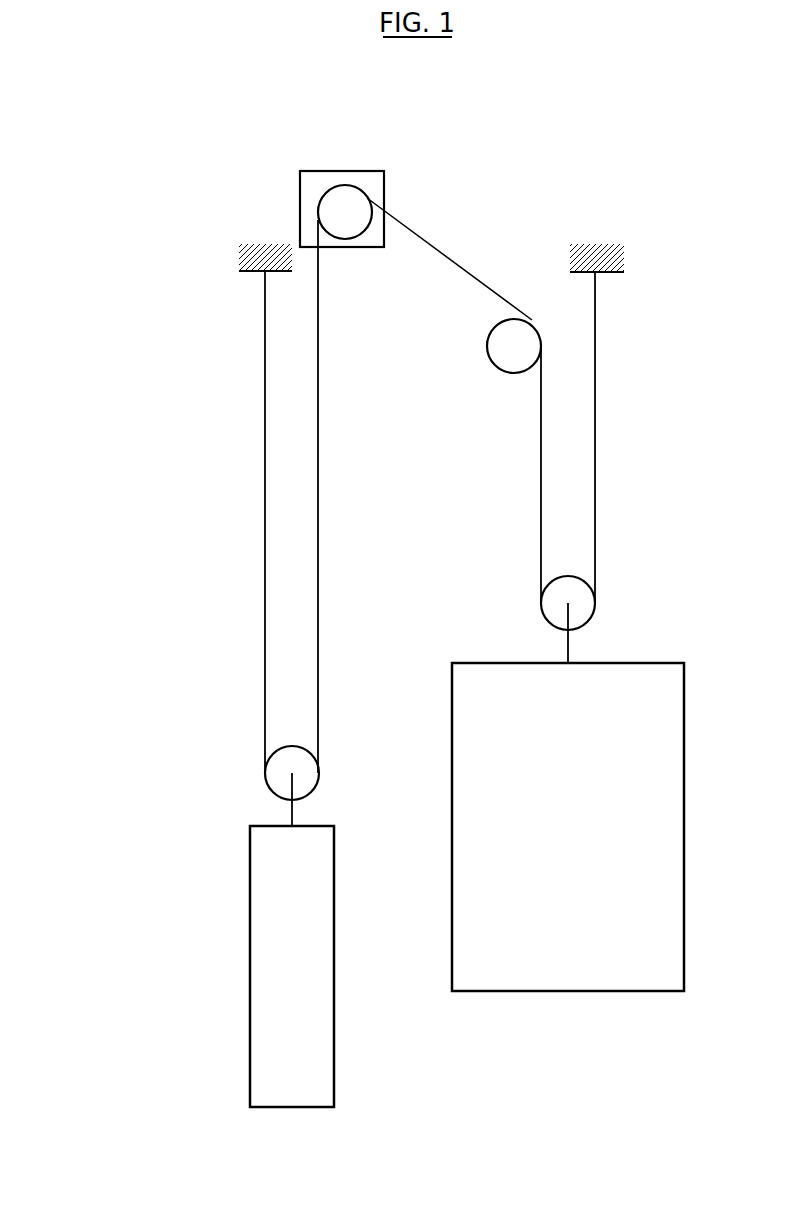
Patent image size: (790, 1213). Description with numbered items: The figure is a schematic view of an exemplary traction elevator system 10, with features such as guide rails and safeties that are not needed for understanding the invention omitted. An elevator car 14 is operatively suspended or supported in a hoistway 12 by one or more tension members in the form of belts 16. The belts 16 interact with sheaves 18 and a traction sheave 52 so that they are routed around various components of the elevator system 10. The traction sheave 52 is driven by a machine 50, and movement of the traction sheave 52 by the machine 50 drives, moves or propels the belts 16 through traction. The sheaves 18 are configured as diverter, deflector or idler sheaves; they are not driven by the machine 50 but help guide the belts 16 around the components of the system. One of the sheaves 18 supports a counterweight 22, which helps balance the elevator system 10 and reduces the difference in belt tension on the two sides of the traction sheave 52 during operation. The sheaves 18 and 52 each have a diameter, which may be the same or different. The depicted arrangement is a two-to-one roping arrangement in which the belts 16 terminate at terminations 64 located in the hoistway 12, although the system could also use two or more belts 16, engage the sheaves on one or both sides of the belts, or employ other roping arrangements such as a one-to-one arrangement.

The elevator system 10 is at (163, 262).
The hoistway 12 is at (388, 623).
The elevator car 14 is at (552, 840).
The belt 16 is at (265, 521).
The sheave 18 is at (515, 347).
The counterweight 22 is at (270, 974).
The machine 50 is at (300, 195).
The traction sheave 52 is at (331, 226).
The termination 64 is at (265, 271).